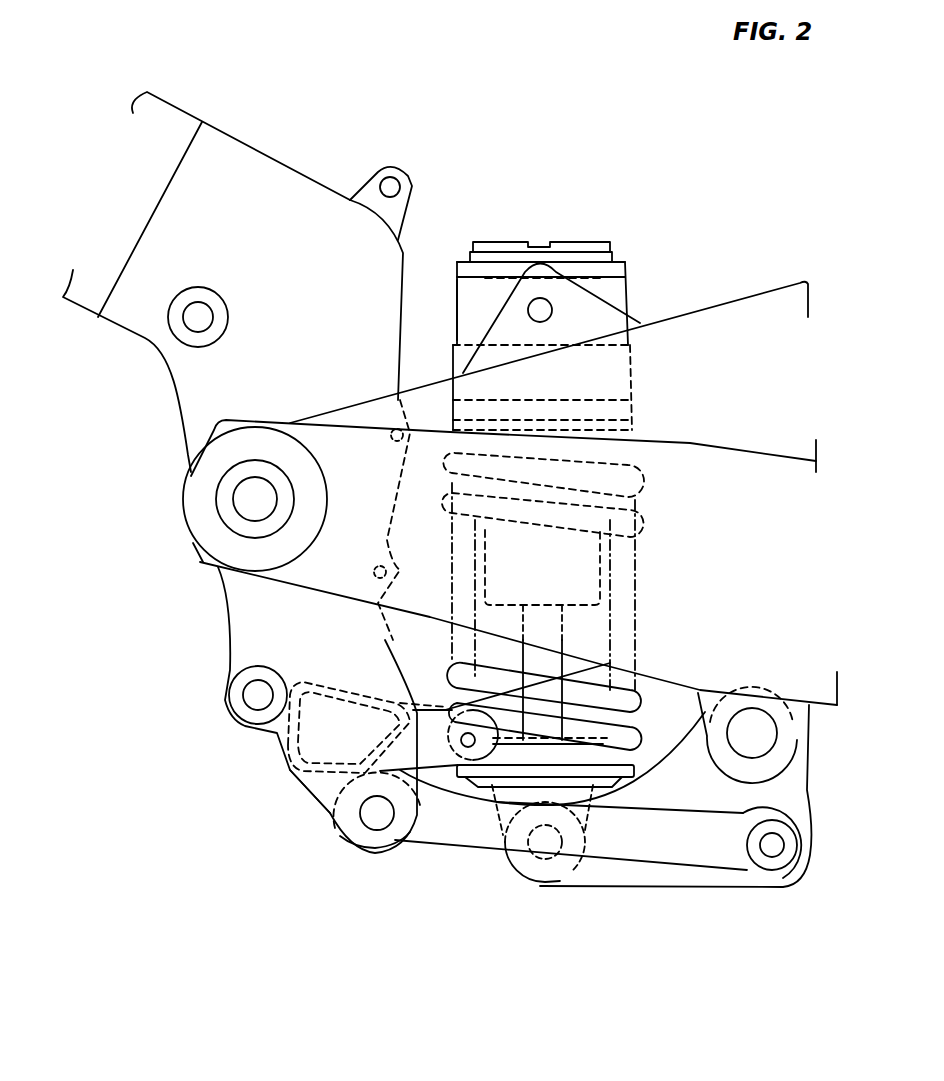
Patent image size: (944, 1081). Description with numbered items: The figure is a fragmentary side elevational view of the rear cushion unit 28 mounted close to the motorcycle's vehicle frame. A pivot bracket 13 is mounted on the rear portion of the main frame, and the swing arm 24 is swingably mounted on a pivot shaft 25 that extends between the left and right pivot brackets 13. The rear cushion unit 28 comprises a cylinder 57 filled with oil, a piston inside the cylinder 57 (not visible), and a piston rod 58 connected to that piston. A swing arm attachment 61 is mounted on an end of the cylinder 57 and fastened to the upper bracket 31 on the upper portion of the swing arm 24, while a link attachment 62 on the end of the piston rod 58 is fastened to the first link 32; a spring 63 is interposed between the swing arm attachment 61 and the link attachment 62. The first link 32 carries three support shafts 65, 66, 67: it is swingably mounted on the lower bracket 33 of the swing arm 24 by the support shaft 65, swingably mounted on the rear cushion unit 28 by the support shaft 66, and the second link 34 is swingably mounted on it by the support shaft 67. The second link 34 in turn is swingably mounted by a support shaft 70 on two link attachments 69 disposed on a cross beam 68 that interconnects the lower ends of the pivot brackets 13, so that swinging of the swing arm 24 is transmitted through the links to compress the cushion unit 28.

The pivot bracket 13 is at (223, 613).
The swing arm 24 is at (800, 280).
The pivot shaft 25 is at (218, 488).
The rear cushion unit 28 is at (590, 232).
The upper bracket 31 is at (605, 298).
The first link 32 is at (675, 887).
The lower bracket 33 is at (805, 717).
The second link 34 is at (603, 855).
The cylinder 57 is at (640, 373).
The piston rod 58 is at (610, 663).
The swing arm attachment 61 is at (456, 305).
The link attachment 62 is at (497, 787).
The spring 63 is at (640, 486).
The support shaft 65 is at (797, 743).
The support shaft 66 is at (533, 862).
The support shaft 67 is at (783, 874).
The cross beam 68 is at (277, 728).
The link attachment 69 is at (315, 801).
The support shaft 70 is at (357, 817).